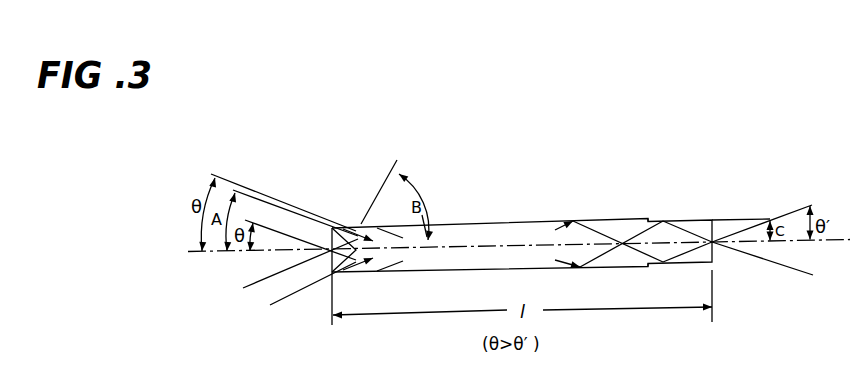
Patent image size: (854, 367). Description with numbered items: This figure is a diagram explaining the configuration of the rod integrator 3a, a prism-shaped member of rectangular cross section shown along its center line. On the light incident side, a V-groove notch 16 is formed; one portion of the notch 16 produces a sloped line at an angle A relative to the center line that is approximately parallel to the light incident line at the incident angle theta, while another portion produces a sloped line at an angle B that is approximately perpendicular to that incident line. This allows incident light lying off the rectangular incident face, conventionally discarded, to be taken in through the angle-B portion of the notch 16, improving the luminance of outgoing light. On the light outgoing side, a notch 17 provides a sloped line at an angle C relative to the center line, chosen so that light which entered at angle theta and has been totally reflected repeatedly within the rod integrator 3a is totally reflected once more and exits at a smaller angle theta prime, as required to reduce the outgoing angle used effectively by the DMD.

The rod integrator 3a is at (497, 223).
The V-groove notch 16 is at (352, 227).
The notch 17 is at (649, 222).